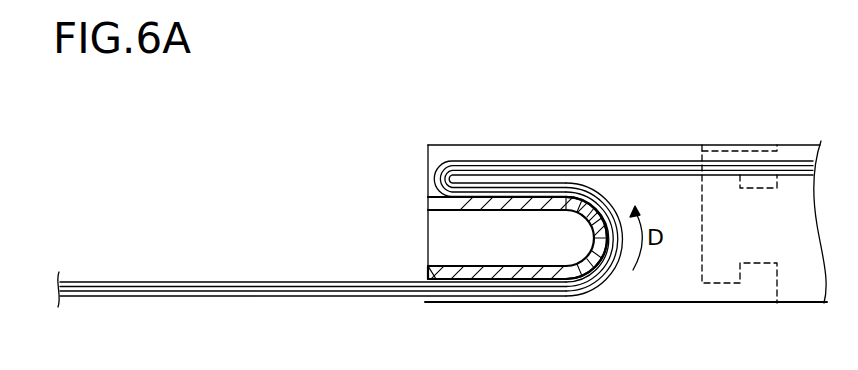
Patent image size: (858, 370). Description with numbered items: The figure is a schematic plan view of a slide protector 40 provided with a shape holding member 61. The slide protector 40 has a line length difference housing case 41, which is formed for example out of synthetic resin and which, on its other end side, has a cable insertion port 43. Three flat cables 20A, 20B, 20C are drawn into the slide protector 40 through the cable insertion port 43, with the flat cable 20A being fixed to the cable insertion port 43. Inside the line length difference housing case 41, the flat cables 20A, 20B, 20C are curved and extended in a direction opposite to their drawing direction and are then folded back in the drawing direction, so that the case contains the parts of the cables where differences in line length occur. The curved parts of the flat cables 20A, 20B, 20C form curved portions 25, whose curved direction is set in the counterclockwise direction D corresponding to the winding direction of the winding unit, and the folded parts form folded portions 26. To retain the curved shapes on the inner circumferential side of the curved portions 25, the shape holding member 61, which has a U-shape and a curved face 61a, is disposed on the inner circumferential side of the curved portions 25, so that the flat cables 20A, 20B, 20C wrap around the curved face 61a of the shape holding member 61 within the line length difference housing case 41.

The flat cable 20A is at (199, 282).
The flat cable 20B is at (247, 287).
The flat cable 20C is at (287, 297).
The curved portion 25 is at (620, 270).
The folded portion 26 is at (496, 160).
The slide protector 40 is at (646, 146).
The line length difference housing case 41 is at (546, 303).
The cable insertion port 43 is at (430, 279).
The shape holding member 61 is at (512, 278).
The curved face 61a is at (607, 200).